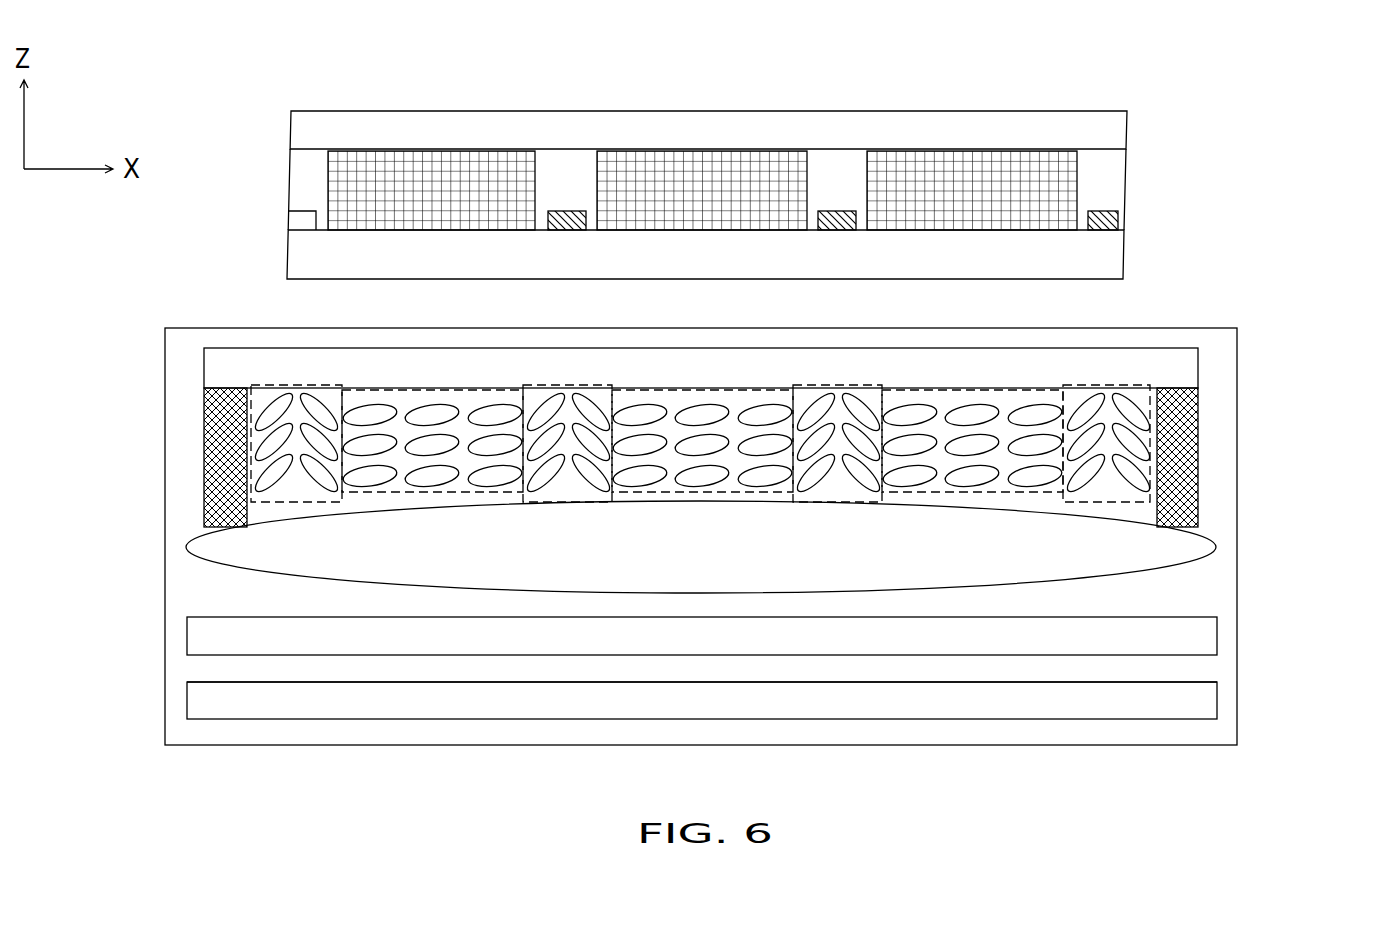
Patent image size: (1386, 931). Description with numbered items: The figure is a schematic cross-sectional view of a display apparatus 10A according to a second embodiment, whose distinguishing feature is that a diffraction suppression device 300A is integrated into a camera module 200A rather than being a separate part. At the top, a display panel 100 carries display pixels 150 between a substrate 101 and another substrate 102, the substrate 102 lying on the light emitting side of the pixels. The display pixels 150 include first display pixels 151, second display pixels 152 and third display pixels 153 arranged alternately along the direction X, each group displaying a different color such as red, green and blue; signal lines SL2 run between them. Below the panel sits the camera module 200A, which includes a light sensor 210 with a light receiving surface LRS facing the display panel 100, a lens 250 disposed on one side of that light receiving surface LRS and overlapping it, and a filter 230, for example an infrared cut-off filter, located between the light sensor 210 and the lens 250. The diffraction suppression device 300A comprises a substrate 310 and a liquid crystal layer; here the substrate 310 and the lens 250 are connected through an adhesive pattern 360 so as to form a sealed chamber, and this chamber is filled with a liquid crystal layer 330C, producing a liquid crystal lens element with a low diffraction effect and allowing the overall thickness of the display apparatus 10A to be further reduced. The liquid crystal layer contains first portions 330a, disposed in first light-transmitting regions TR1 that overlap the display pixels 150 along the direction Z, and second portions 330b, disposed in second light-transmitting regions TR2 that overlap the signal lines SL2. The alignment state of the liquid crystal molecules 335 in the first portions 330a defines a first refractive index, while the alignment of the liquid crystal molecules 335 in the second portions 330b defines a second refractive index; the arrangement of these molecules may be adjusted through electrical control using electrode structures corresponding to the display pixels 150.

The display apparatus 10A is at (1322, 813).
The display panel 100 is at (263, 112).
The substrate 101 is at (1112, 246).
The substrate 102 is at (1113, 128).
The display pixels 150 is at (702, 132).
The first display pixels 151 is at (465, 158).
The second display pixels 152 is at (735, 158).
The third display pixels 153 is at (978, 158).
The signal lines SL2 is at (1112, 218).
The camera module 200A is at (97, 328).
The light sensor 210 is at (1200, 702).
The filter 230 is at (1198, 638).
The lens 250 is at (1205, 545).
The light receiving surface LRS is at (241, 674).
The diffraction suppression device 300A is at (1317, 343).
The substrate 310 is at (1187, 370).
The liquid crystal molecules 335 is at (1132, 414).
The liquid crystal layer 330C is at (1147, 470).
The adhesive pattern 360 is at (1177, 487).
The first portions 330a is at (765, 412).
The second portions 330b is at (853, 410).
The first light-transmitting regions TR1 is at (432, 390).
The second light-transmitting regions TR2 is at (300, 388).